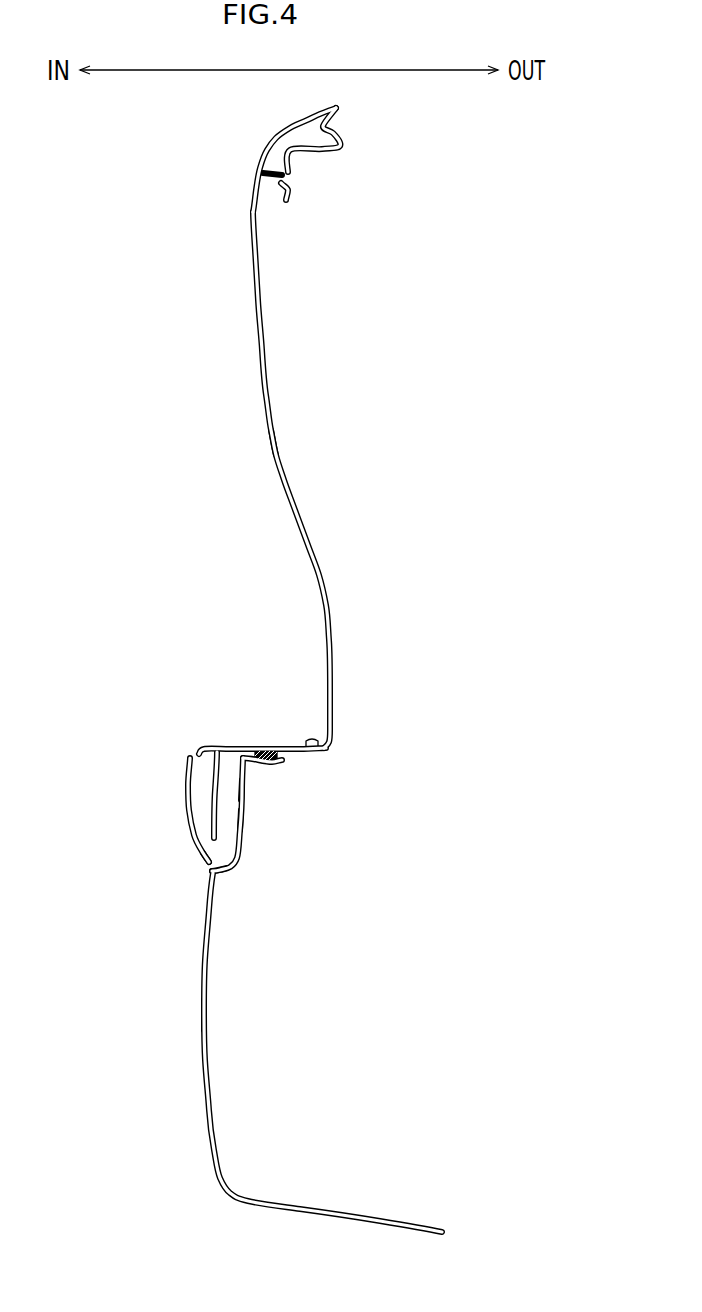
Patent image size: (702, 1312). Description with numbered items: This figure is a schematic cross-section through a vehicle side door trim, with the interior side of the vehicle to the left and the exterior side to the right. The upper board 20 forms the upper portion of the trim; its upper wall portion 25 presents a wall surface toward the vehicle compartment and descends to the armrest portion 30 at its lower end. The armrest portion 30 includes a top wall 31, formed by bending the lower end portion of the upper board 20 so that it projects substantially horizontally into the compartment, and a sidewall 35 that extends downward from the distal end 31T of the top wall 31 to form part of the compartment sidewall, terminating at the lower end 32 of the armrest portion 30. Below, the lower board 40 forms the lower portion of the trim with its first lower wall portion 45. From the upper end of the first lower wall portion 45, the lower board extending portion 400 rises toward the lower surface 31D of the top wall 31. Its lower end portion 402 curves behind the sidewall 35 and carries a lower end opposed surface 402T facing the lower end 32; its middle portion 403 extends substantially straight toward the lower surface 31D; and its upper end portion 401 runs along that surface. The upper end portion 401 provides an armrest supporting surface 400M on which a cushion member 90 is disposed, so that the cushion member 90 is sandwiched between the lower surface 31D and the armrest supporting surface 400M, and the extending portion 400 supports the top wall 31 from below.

The upper board 20 is at (224, 428).
The upper wall portion 25 is at (273, 437).
The armrest portion 30 is at (229, 766).
The top wall 31 is at (242, 745).
The distal end 31T is at (200, 750).
The lower surface 31D is at (313, 756).
The lower end 32 is at (208, 863).
The sidewall 35 is at (183, 802).
The lower board 40 is at (254, 1052).
The first lower wall portion 45 is at (202, 1018).
The cushion member 90 is at (280, 756).
The lower board extending portion 400 is at (240, 855).
The armrest supporting surface 400M is at (250, 788).
The upper end portion 401 is at (270, 767).
The lower end portion 402 is at (238, 874).
The lower end opposed surface 402T is at (210, 870).
The middle portion 403 is at (250, 818).